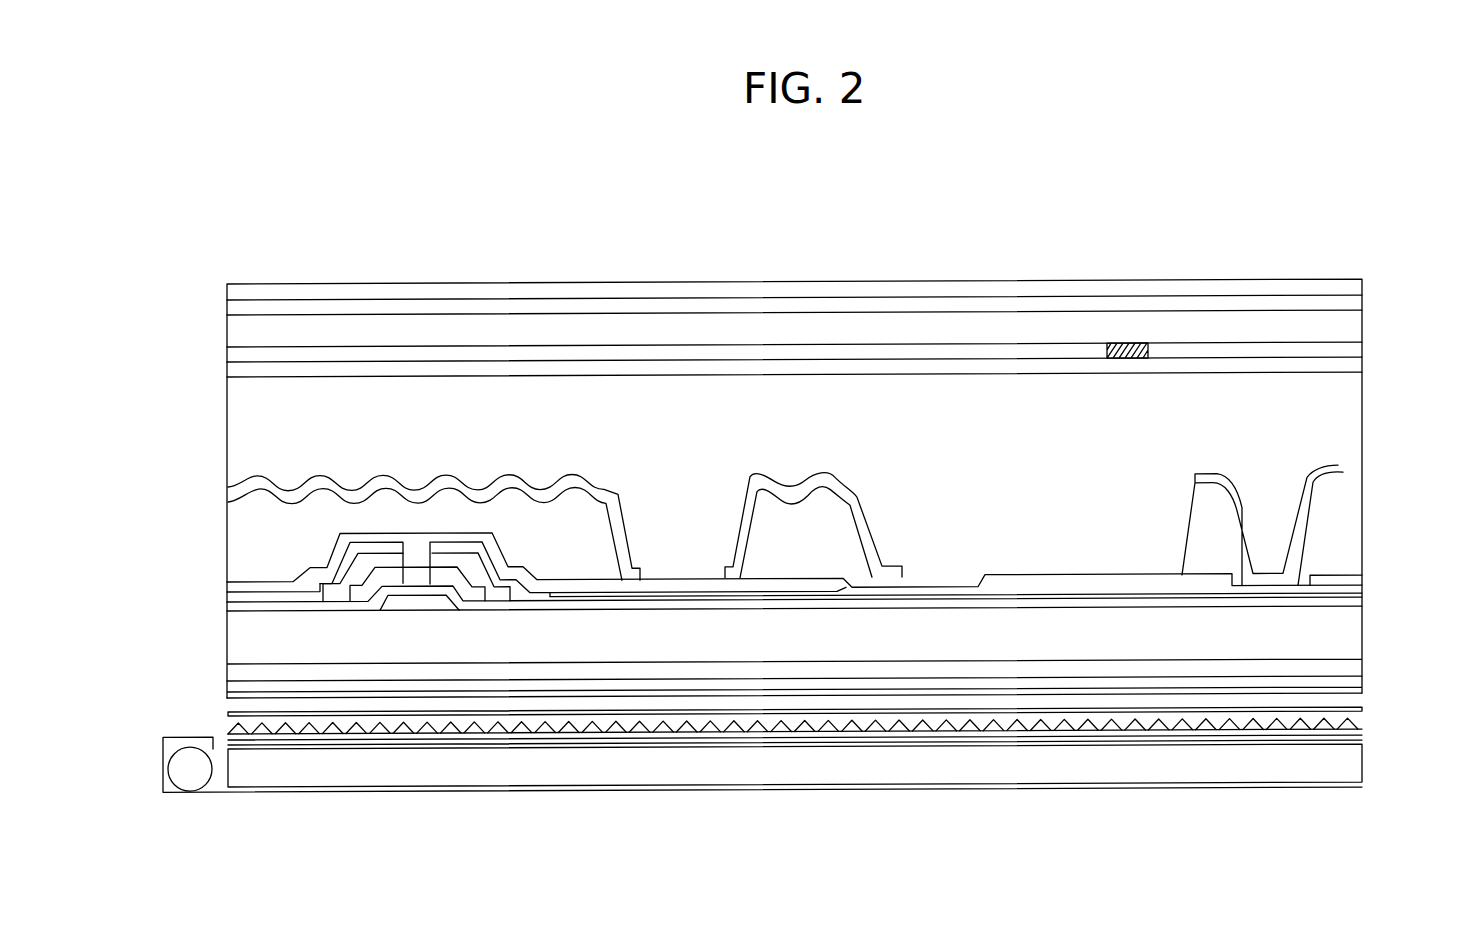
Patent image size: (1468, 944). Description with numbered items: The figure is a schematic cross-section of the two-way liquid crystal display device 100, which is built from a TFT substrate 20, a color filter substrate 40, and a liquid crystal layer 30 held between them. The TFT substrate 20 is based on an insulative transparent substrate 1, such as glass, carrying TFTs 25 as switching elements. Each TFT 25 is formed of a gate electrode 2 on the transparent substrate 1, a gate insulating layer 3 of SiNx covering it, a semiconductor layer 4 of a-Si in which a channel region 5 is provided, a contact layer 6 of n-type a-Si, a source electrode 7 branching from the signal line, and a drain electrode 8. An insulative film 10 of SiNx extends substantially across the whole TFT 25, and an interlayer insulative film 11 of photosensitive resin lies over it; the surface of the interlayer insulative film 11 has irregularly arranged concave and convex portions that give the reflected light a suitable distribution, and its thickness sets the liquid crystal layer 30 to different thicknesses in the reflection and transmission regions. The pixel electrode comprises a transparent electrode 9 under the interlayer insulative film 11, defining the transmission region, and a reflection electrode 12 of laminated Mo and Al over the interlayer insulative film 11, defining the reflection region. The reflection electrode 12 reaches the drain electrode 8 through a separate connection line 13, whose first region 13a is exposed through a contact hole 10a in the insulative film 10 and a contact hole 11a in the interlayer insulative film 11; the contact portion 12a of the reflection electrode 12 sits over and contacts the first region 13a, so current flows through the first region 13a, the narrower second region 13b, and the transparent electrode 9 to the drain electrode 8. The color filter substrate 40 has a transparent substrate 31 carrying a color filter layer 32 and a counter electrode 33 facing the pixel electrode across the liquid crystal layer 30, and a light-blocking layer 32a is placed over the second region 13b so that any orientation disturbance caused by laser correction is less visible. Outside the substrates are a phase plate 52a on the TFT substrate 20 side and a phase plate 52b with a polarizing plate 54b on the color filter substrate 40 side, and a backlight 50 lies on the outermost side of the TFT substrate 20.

The liquid crystal display device 100 is at (1285, 220).
The transparent substrate 1 is at (1337, 628).
The gate electrode 2 is at (393, 605).
The gate insulating layer 3 is at (357, 594).
The semiconductor layer 4 is at (472, 594).
The channel region 5 is at (417, 581).
The contact layer 6 is at (498, 594).
The source electrode 7 is at (312, 596).
The drain electrode 8 is at (527, 594).
The transparent electrode 9 is at (568, 598).
The insulative film 10 is at (250, 587).
The contact hole 10a is at (1315, 572).
The interlayer insulative film 11 is at (1330, 529).
The contact hole 11a is at (1290, 530).
The reflection electrode 12 is at (232, 487).
The contact portion 12a is at (1270, 588).
The connection line 13 is at (1255, 835).
The first region 13a is at (1250, 594).
The second region 13b is at (1128, 597).
The TFT substrate 20 is at (1408, 418).
The TFT 25 is at (423, 507).
The liquid crystal layer 30 is at (250, 426).
The transparent substrate 31 is at (1328, 334).
The color filter layer 32 is at (1328, 356).
The light-blocking layer 32a is at (1123, 346).
The counter electrode 33 is at (1327, 369).
The color filter substrate 40 is at (1405, 323).
The backlight 50 is at (163, 792).
The phase plate 52a is at (1337, 671).
The phase plate 52b is at (1328, 304).
The polarizing plate 54b is at (1328, 293).